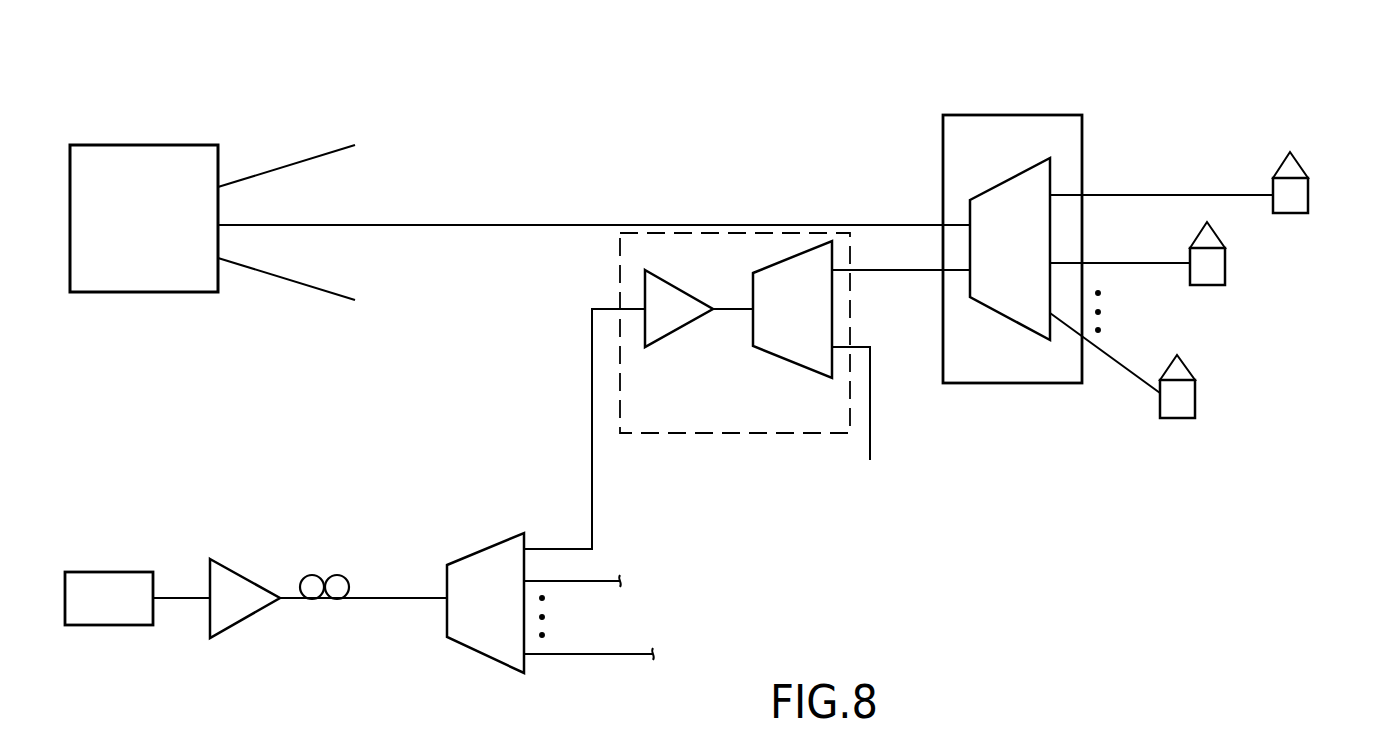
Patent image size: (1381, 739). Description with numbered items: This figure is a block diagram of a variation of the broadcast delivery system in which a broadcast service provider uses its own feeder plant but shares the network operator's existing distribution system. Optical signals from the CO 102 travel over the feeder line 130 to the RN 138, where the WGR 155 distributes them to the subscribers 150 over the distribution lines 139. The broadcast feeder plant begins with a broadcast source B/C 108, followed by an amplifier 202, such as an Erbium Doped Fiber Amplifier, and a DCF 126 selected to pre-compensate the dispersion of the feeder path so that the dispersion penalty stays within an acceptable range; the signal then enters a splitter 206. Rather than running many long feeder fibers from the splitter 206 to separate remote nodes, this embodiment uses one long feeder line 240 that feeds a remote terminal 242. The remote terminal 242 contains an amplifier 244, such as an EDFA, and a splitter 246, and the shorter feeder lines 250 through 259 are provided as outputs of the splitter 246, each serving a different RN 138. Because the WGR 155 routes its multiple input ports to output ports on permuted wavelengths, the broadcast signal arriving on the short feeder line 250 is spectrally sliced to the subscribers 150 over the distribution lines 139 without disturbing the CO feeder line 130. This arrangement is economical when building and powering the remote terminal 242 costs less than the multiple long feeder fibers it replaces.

The CO 102 is at (137, 145).
The broadcast source 108 is at (105, 572).
The DCF 126 is at (350, 582).
The feeder line 130 is at (472, 225).
The RN 138 is at (1040, 115).
The distribution lines 139 is at (1128, 408).
The subscribers 150 is at (1308, 194).
The WGR 155 is at (1015, 317).
The amplifier 202 is at (232, 630).
The splitter 206 is at (485, 654).
The long feeder line 240 is at (592, 405).
The remote terminal 242 is at (818, 458).
The amplifier 244 is at (678, 290).
The splitter 246 is at (793, 365).
The short feeder line 250 is at (905, 271).
The short feeder line 259 is at (870, 450).